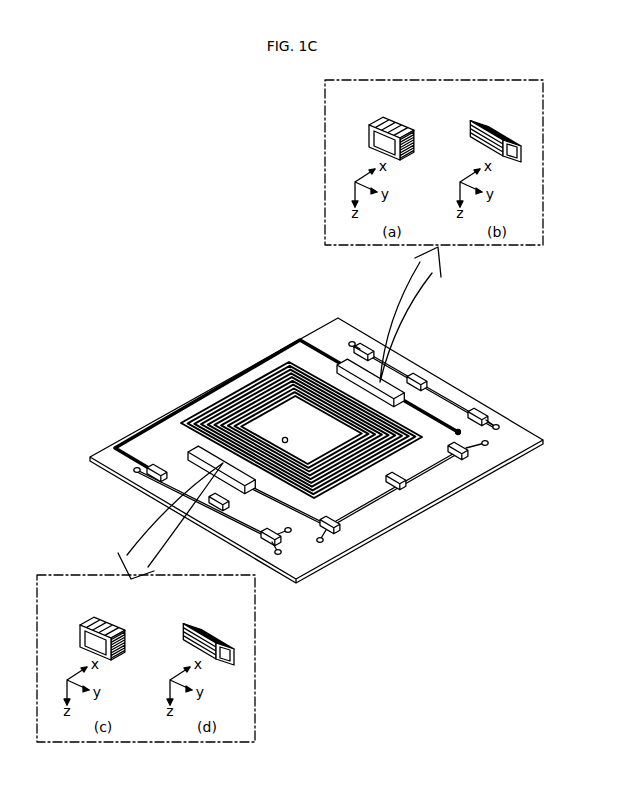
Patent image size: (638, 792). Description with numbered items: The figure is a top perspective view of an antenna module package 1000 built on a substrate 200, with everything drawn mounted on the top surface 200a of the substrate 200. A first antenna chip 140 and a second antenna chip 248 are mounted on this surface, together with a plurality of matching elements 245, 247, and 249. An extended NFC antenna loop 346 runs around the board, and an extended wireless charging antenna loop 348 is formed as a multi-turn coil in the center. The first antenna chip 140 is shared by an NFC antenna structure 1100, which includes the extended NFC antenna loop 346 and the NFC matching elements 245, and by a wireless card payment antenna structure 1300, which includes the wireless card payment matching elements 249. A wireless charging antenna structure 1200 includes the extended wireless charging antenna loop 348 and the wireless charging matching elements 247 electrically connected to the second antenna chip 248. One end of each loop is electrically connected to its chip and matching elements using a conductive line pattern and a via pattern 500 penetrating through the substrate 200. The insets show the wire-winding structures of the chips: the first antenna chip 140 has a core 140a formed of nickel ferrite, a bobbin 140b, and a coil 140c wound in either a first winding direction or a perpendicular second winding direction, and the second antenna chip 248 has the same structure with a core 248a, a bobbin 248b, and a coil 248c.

The antenna module package 1000 is at (130, 283).
The NFC antenna structure 1100 is at (100, 518).
The wireless charging antenna structure 1200 is at (436, 566).
The wireless card payment antenna structure 1300 is at (461, 330).
The substrate 200 is at (380, 596).
The top surface of the substrate 200a is at (364, 550).
The first antenna chip 140 is at (350, 370).
The core 140a is at (380, 145).
The bobbin 140b is at (412, 136).
The coil 140c is at (396, 120).
The NFC matching elements 245 is at (150, 480).
The wireless charging matching elements 247 is at (456, 457).
The second antenna chip 248 is at (197, 447).
The core 248a is at (92, 646).
The bobbin 248b is at (126, 634).
The coil 248c is at (109, 618).
The wireless card payment matching elements 249 is at (476, 412).
The extended NFC antenna loop 346 is at (207, 392).
The extended wireless charging antenna loop 348 is at (288, 360).
The via pattern 500 is at (285, 438).